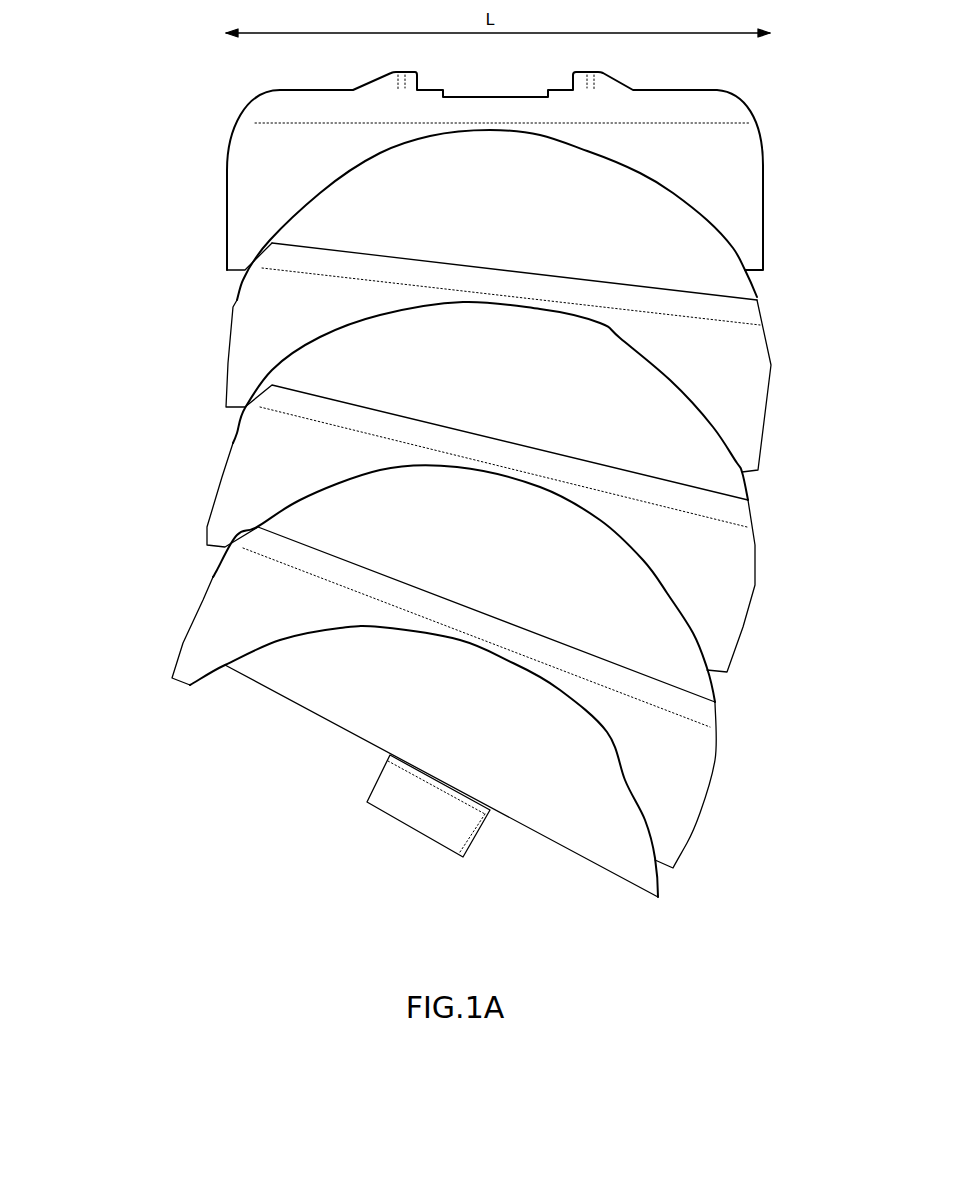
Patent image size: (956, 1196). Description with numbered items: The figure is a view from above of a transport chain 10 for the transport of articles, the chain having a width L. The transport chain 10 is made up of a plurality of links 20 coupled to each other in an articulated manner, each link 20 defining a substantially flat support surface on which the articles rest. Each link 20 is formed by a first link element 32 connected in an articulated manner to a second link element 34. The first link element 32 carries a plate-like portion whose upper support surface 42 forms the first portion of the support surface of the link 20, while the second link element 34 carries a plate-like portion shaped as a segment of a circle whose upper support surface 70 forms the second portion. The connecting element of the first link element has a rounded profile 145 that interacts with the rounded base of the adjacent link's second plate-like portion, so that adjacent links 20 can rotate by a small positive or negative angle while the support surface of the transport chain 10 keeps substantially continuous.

The transport chain 10 is at (107, 812).
The link 20 is at (115, 690).
The first link element 32 is at (176, 590).
The second link element 34 is at (243, 707).
The upper support surface 42 is at (243, 183).
The upper support surface 70 is at (700, 258).
The rounded profile 145 is at (258, 115).